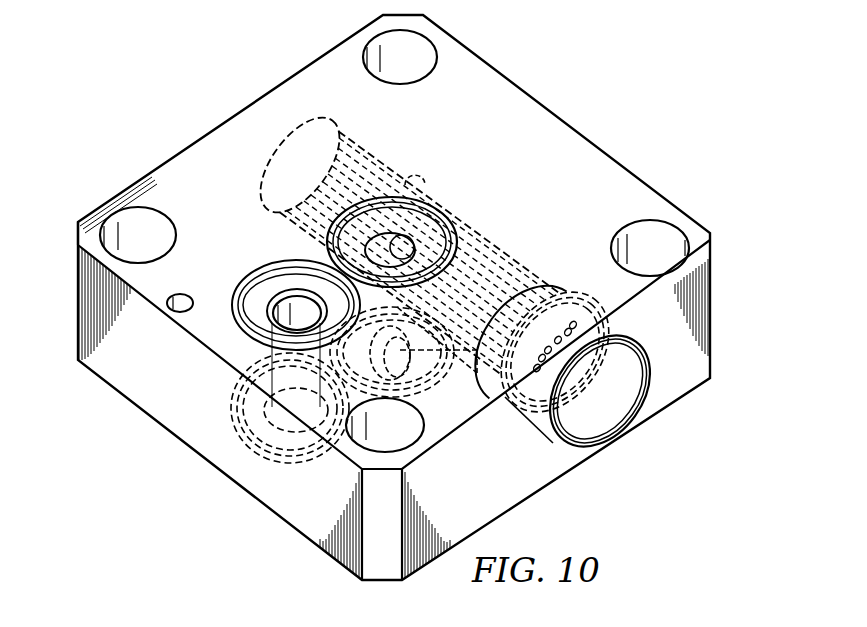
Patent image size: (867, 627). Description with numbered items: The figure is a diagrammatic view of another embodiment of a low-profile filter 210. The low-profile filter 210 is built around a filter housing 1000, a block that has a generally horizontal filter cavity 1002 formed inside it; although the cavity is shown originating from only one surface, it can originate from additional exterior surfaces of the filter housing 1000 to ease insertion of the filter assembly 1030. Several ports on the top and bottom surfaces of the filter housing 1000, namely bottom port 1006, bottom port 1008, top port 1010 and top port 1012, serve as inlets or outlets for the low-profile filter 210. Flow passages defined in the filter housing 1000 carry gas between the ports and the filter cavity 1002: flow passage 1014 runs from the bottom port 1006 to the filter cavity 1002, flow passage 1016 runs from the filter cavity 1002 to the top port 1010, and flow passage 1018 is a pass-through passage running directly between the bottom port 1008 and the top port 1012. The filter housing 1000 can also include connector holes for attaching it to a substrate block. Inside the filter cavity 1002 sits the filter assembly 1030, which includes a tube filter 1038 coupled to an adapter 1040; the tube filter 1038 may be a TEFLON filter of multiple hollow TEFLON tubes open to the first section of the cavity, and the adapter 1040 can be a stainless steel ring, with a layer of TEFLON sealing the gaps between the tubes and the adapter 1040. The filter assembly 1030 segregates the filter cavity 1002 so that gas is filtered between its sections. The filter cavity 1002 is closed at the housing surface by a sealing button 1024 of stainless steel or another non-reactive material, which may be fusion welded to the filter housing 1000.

The low-profile filter 210 is at (226, 84).
The filter housing 1000 is at (530, 115).
The filter cavity 1002 is at (425, 185).
The bottom port 1006 is at (445, 417).
The bottom port 1008 is at (232, 428).
The top port 1010 is at (443, 200).
The top port 1012 is at (234, 300).
The flow passage 1014 is at (484, 405).
The flow passage 1016 is at (345, 228).
The flow passage 1018 is at (240, 376).
The sealing button 1024 is at (590, 412).
The filter assembly 1030 is at (496, 253).
The tube filter 1038 is at (358, 170).
The adapter 1040 is at (578, 298).